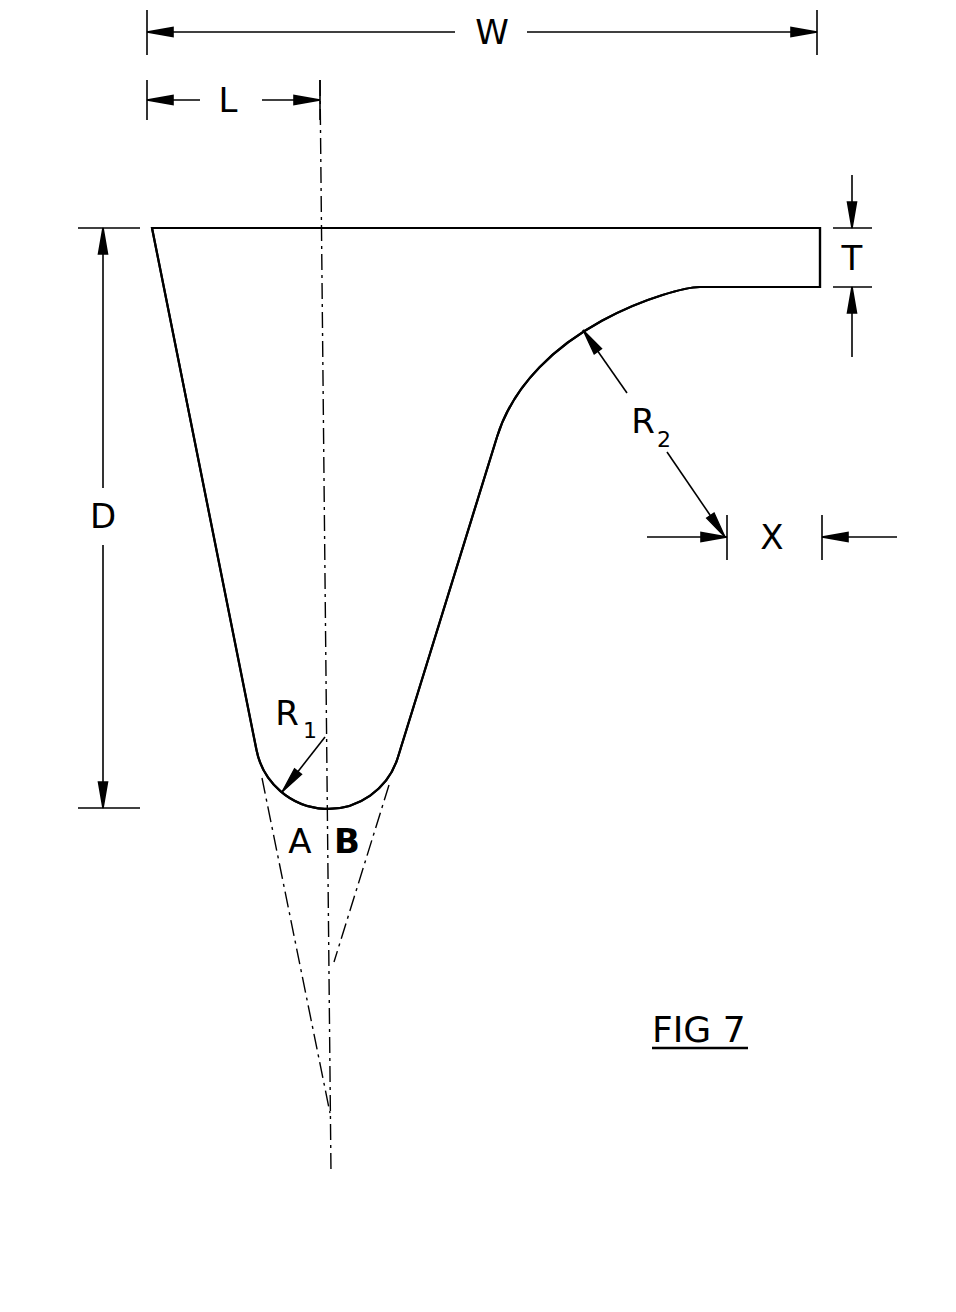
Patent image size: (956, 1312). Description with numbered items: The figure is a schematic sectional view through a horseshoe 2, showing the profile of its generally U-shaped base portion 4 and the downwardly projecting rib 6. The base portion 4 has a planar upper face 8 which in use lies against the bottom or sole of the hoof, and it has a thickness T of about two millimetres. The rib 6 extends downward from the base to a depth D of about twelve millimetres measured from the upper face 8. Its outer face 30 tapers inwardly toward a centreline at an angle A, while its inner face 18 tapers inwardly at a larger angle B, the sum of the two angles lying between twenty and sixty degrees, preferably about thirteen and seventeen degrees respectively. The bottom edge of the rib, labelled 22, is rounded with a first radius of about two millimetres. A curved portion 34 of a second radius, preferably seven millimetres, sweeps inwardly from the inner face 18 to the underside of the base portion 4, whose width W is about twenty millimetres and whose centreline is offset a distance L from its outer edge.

The horseshoe 2 is at (640, 695).
The base portion 4 is at (470, 285).
The rib 6 is at (305, 592).
The upper face 8 is at (606, 228).
The inner face 18 is at (441, 620).
The root radius 22 is at (343, 808).
The outer face 30 is at (215, 561).
The curved portion 34 is at (567, 343).